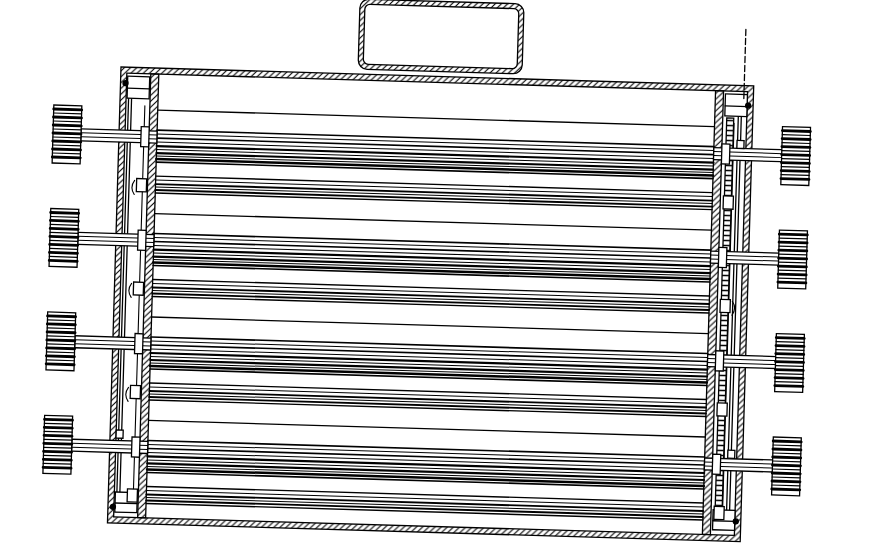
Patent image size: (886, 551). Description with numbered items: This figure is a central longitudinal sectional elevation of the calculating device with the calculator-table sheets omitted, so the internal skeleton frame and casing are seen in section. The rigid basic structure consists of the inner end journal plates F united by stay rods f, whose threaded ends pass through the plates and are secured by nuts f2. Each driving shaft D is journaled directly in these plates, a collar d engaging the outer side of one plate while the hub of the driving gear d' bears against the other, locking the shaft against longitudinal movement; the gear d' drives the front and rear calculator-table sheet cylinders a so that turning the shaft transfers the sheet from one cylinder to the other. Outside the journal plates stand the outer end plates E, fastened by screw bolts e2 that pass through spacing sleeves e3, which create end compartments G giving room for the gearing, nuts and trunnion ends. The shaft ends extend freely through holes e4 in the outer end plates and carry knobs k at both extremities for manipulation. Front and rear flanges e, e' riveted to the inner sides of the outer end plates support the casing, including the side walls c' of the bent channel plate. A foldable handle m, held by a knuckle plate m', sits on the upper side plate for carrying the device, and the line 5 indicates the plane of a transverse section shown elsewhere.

The foldable handle m is at (452, 37).
The knuckle plate m' is at (441, 36).
The side wall c' is at (431, 282).
The inner end journal plate F is at (167, 91).
The calculator-table sheet cylinder a is at (478, 495).
The driving shaft D is at (554, 125).
The stay rod f is at (776, 309).
The outer end plate E is at (121, 108).
The rear flange e' is at (470, 291).
The driving gear d' is at (762, 299).
The end compartment G is at (146, 71).
The spacing sleeve e3 is at (137, 78).
The screw bolt e2 is at (120, 82).
The section line 5— 5 is at (747, 55).
The knob k is at (430, 301).
The collar d is at (400, 300).
The front flange e is at (427, 348).
The nut f2 is at (144, 185).
The hole e4 is at (123, 437).